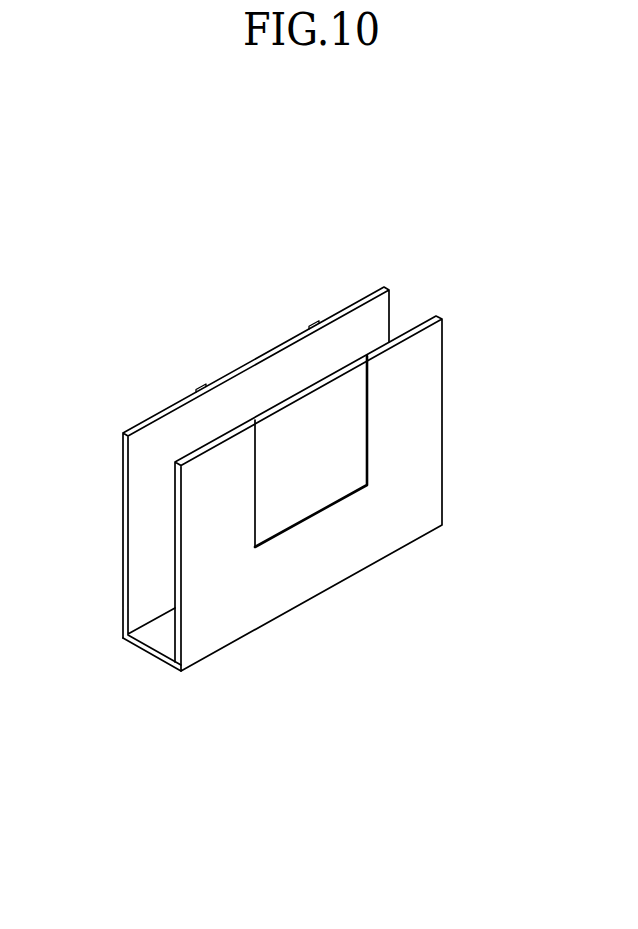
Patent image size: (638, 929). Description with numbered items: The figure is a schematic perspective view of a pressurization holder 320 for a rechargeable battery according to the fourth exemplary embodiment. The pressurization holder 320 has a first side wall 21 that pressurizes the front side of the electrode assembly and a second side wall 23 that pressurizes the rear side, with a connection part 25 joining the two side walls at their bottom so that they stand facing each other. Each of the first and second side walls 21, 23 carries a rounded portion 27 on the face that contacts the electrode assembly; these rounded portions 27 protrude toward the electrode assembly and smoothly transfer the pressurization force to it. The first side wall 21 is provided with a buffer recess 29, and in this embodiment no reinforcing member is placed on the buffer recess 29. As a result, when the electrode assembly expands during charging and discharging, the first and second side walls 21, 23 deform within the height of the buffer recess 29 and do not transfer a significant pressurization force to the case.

The pressurization holder 320 is at (461, 298).
The first side wall 21 is at (186, 638).
The second side wall 23 is at (120, 617).
The connection part 25 is at (146, 658).
The rounded portion 27 is at (268, 369).
The buffer recess 29 is at (308, 488).